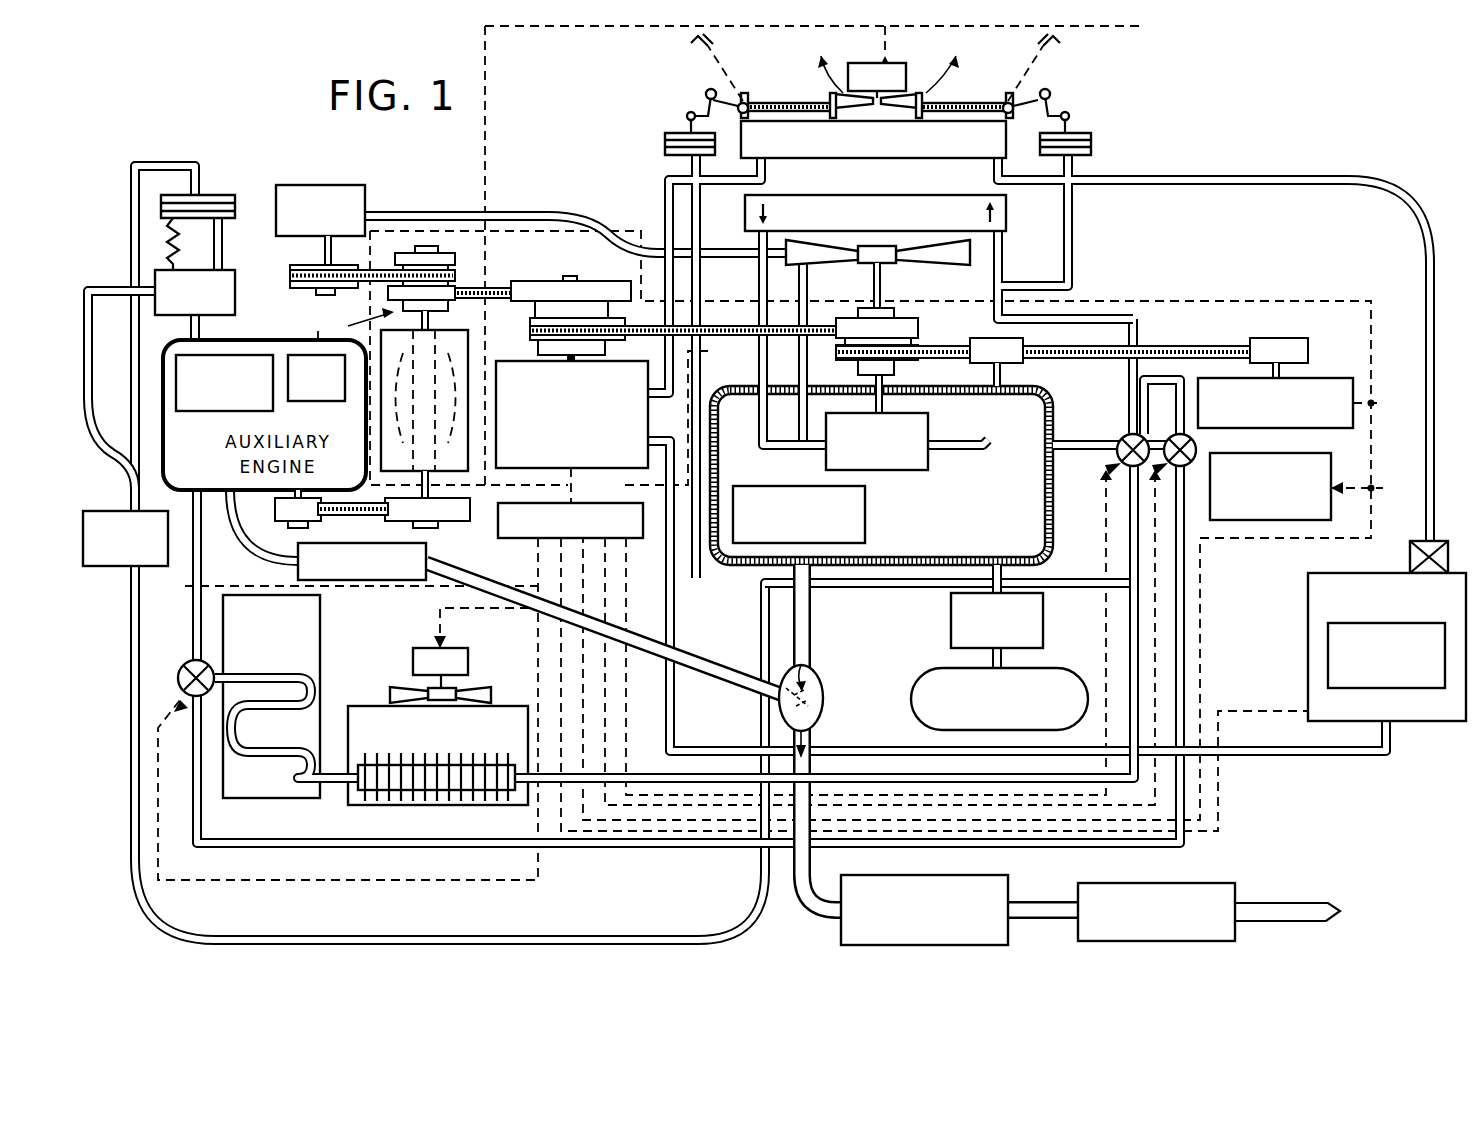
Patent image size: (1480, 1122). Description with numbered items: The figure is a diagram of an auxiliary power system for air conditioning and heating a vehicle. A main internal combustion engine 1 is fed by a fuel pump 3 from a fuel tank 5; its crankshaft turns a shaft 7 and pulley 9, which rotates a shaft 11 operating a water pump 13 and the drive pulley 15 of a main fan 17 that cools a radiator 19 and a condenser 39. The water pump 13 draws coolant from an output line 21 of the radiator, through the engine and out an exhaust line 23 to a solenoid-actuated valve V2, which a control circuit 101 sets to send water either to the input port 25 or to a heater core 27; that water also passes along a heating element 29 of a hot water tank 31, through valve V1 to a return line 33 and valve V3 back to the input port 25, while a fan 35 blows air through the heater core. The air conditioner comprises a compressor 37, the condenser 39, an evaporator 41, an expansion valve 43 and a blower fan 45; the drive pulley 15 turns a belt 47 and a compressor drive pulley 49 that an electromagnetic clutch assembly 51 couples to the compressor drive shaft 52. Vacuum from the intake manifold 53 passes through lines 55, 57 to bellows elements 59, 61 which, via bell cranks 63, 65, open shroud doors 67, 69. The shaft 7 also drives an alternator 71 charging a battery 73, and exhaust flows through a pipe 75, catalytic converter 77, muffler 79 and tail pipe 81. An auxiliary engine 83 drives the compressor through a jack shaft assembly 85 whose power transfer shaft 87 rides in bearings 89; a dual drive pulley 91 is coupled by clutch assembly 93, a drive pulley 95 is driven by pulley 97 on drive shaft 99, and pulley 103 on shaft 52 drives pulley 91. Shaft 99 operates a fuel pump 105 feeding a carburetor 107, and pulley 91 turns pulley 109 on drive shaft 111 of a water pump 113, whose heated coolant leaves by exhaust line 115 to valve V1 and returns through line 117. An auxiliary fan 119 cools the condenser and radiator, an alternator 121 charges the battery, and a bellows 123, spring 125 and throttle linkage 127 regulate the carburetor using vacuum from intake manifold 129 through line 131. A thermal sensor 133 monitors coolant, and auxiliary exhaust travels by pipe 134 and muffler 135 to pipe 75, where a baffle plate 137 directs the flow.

The main internal combustion engine 1 is at (1045, 515).
The fuel pump 3 is at (943, 615).
The fuel tank 5 is at (903, 678).
The shaft 7 is at (1000, 368).
The pulley 9 is at (1008, 334).
The shaft 11 is at (880, 402).
The water pump 13 is at (922, 458).
The drive pulley 15 is at (910, 318).
The main fan 17 is at (955, 248).
The radiator 19 is at (846, 187).
The output line 21 is at (750, 358).
The exhaust line 23 is at (1068, 435).
The input port 25 is at (998, 215).
The heater core 27 is at (460, 797).
The heating element 29 is at (307, 680).
The hot water tank 31 is at (257, 795).
The return line 33 is at (185, 787).
The fan 35 is at (460, 652).
The compressor 37 is at (582, 460).
The condenser 39 is at (840, 150).
The evaporator 41 is at (1300, 690).
The expansion valve 43 is at (1402, 550).
The blower fan 45 is at (1320, 652).
The belt 47 is at (732, 322).
The compressor drive pulley 49 is at (627, 342).
The electromagnetic clutch assembly 51 is at (500, 280).
The drive shaft 52 is at (570, 269).
The intake manifold 53 is at (757, 478).
The line 55 is at (683, 195).
The line 57 is at (1066, 230).
The vacuum bellows element 59 is at (657, 140).
The vacuum bellows element 61 is at (1083, 137).
The bell crank 63 is at (694, 98).
The bell crank 65 is at (1048, 98).
The shroud door 67 is at (780, 95).
The shroud door 69 is at (965, 95).
The alternator 71 is at (1312, 370).
The battery 73 is at (1315, 440).
The pipe 75 is at (804, 603).
The catalytic converter 77 is at (990, 867).
The muffler 79 is at (1195, 875).
The tail pipe 81 is at (1293, 895).
The auxiliary internal combustion engine 83 is at (155, 410).
The jack shaft assembly 85 is at (462, 290).
The power transfer shaft 87 is at (452, 411).
The bearings 89 is at (424, 400).
The dual drive pulley 91 is at (396, 248).
The electromagnetic clutch assembly 93 is at (413, 248).
The drive pulley 95 is at (440, 515).
The pulley 97 is at (315, 515).
The drive shaft 99 is at (285, 520).
The control circuit 101 is at (660, 530).
The drive pulley 103 is at (533, 273).
The fuel pump 105 is at (97, 557).
The carburetor 107 is at (220, 263).
The pulley 109 is at (296, 282).
The drive shaft 111 is at (326, 247).
The water pump 113 is at (283, 177).
The exhaust line 115 is at (185, 627).
The line 117 is at (1120, 576).
The auxiliary fan 119 is at (898, 55).
The alternator 121 is at (320, 393).
The vacuum-controlled bellows 123 is at (207, 188).
The spring 125 is at (160, 240).
The throttle linkage 127 is at (207, 250).
The intake manifold 129 is at (198, 403).
The line 131 is at (135, 153).
The thermal sensor 133 is at (180, 578).
The pipe 134 is at (230, 515).
The muffler 135 is at (342, 572).
The baffle plate 137 is at (816, 694).
The solenoid-actuated valve V1 is at (170, 668).
The solenoid-actuated valve V2 is at (1112, 428).
The solenoid-actuated valve V3 is at (1160, 428).